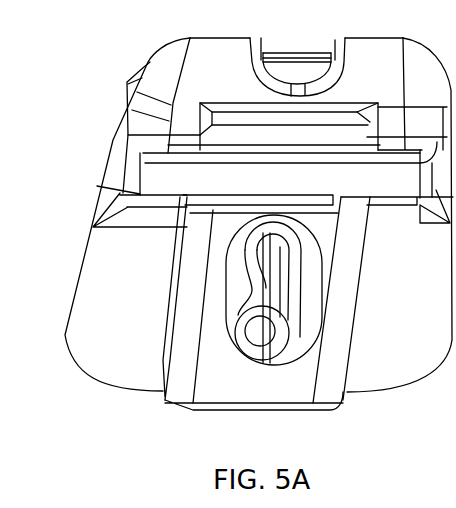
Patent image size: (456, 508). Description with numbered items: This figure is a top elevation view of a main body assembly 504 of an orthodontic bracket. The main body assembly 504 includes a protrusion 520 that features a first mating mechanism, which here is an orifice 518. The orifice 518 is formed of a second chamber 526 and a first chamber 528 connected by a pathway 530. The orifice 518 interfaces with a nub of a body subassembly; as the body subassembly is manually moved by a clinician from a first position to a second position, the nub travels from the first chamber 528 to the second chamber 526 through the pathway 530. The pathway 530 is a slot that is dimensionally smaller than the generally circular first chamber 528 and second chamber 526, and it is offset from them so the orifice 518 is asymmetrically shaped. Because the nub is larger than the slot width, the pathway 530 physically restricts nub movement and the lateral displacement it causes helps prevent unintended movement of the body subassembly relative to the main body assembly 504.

The main body assembly 504 is at (113, 29).
The orifice 518 is at (311, 293).
The protrusion 520 is at (168, 403).
The second chamber 526 is at (237, 247).
The pathway 530 is at (252, 290).
The first chamber 528 is at (223, 343).